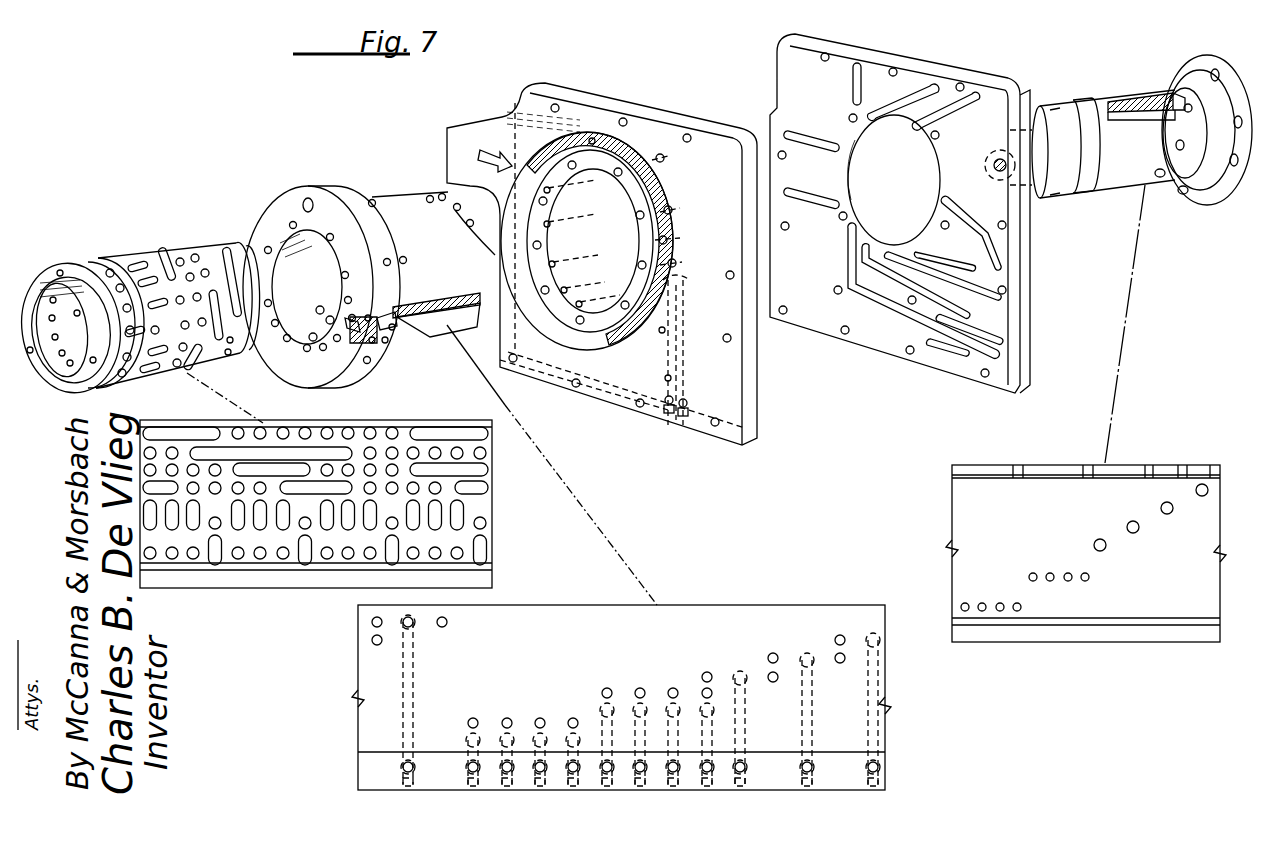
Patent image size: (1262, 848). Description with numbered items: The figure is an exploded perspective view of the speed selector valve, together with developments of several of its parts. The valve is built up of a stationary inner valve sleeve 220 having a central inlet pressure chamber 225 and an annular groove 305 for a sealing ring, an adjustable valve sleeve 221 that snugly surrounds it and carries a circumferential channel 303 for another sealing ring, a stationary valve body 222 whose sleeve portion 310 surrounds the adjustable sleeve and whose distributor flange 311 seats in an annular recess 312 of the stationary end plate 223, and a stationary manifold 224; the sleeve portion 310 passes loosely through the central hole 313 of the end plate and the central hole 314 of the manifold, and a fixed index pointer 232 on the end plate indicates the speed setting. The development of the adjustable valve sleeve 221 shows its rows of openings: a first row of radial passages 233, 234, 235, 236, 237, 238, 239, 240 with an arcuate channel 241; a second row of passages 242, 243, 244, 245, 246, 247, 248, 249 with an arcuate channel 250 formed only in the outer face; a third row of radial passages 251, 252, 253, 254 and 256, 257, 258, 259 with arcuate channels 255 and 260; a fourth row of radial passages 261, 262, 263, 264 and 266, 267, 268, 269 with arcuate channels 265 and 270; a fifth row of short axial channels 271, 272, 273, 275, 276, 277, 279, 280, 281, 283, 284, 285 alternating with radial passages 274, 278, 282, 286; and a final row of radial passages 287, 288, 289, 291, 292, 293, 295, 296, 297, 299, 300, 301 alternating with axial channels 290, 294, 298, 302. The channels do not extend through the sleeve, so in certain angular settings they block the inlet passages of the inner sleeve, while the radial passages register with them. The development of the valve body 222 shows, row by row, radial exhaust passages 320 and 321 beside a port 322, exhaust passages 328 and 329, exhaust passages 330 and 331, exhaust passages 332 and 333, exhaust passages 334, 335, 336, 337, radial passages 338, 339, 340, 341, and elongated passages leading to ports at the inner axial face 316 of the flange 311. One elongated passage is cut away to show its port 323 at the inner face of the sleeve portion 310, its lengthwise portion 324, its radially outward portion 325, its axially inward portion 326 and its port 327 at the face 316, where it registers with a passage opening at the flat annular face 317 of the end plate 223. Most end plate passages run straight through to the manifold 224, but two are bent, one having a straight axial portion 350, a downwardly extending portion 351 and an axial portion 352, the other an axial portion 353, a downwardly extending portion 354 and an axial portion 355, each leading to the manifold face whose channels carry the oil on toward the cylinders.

The stationary inner valve sleeve 220 is at (1128, 196).
The adjustable valve sleeve 221 is at (180, 246).
The stationary valve body 222 is at (388, 190).
The stationary end plate 223 is at (703, 120).
The stationary manifold 224 is at (867, 338).
The inlet pressure chamber 225 is at (1158, 92).
The fixed index pointer 232 is at (490, 150).
The radial passage 233 is at (241, 428).
The radial passage 234 is at (263, 428).
The radial passage 235 is at (284, 427).
The radial passage 236 is at (305, 427).
The radial passage 237 is at (328, 427).
The radial passage 238 is at (348, 427).
The radial passage 239 is at (370, 427).
The radial passage 240 is at (393, 427).
The arcuate channel 241 is at (163, 430).
The second row passage 242 is at (152, 457).
The second row passage 243 is at (174, 457).
The second row passage 244 is at (371, 457).
The second row passage 245 is at (394, 457).
The second row passage 246 is at (416, 457).
The second row passage 247 is at (439, 457).
The second row passage 248 is at (460, 457).
The second row passage 249 is at (487, 455).
The arcuate channel 250 is at (214, 450).
The radial passage 251 is at (151, 474).
The radial passage 252 is at (174, 474).
The radial passage 253 is at (195, 474).
The radial passage 254 is at (217, 474).
The arcuate channel 255 is at (290, 470).
The radial passage 256 is at (327, 474).
The radial passage 257 is at (350, 474).
The radial passage 258 is at (371, 474).
The radial passage 259 is at (394, 474).
The arcuate channel 260 is at (462, 470).
The radial passage 261 is at (189, 493).
The radial passage 262 is at (212, 493).
The radial passage 263 is at (237, 493).
The radial passage 264 is at (262, 493).
The arcuate channel 265 is at (322, 490).
The radial passage 266 is at (366, 493).
The radial passage 267 is at (390, 493).
The radial passage 268 is at (412, 493).
The radial passage 269 is at (434, 493).
The arcuate channel 270 is at (146, 492).
The axial channel 271 is at (152, 521).
The axial channel 272 is at (176, 521).
The axial channel 273 is at (197, 521).
The radial passage 274 is at (217, 517).
The axial channel 275 is at (242, 521).
The axial channel 276 is at (265, 521).
The axial channel 277 is at (287, 521).
The radial passage 278 is at (307, 517).
The axial channel 279 is at (329, 521).
The axial channel 280 is at (352, 521).
The axial channel 281 is at (374, 521).
The radial passage 282 is at (394, 517).
The axial channel 283 is at (414, 521).
The axial channel 284 is at (437, 521).
The axial channel 285 is at (459, 521).
The radial passage 286 is at (487, 524).
The radial passage 287 is at (150, 559).
The radial passage 288 is at (172, 559).
The radial passage 289 is at (193, 559).
The axial channel 290 is at (215, 565).
The radial passage 291 is at (238, 559).
The radial passage 292 is at (260, 559).
The radial passage 293 is at (283, 559).
The axial channel 294 is at (305, 565).
The radial passage 295 is at (327, 559).
The radial passage 296 is at (348, 559).
The radial passage 297 is at (370, 559).
The axial channel 298 is at (392, 565).
The radial passage 299 is at (413, 559).
The radial passage 300 is at (435, 559).
The radial passage 301 is at (457, 559).
The axial channel 302 is at (487, 553).
The circumferential channel 303 is at (86, 262).
The annular groove 305 is at (1087, 192).
The sleeve portion 310 is at (406, 202).
The distributor flange 311 is at (290, 192).
The annular recess 312 is at (528, 160).
The central hole 313 is at (612, 192).
The central hole 314 is at (920, 160).
The inner axial face 316 is at (350, 188).
The flat annular face 317 is at (557, 157).
The radial exhaust passage 320 is at (371, 622).
The radial exhaust passage 321 is at (448, 622).
The port 322 is at (413, 620).
The port 323 is at (390, 303).
The lengthwise interior portion 324 is at (348, 322).
The radially outwardly extending portion 325 is at (360, 332).
The axially inwardly extending portion 326 is at (382, 337).
The port 327 is at (400, 332).
The radial exhaust passage 328 is at (371, 641).
The radial exhaust passage 329 is at (840, 635).
The radial exhaust passage 330 is at (773, 653).
The radial exhaust passage 331 is at (851, 654).
The radial exhaust passage 332 is at (708, 672).
The radial exhaust passage 333 is at (777, 673).
The radial exhaust passage 334 is at (610, 683).
The radial exhaust passage 335 is at (643, 683).
The radial exhaust passage 336 is at (676, 683).
The radial exhaust passage 337 is at (712, 690).
The radial passage 338 is at (480, 713).
The radial passage 339 is at (512, 713).
The radial passage 340 is at (433, 290).
The radial passage 341 is at (575, 713).
The straight axial portion 350 is at (683, 262).
The downwardly extending portion 351 is at (690, 310).
The axial portion 352 is at (690, 378).
The axial portion 353 is at (690, 285).
The downwardly extending portion 354 is at (665, 362).
The axial portion 355 is at (672, 418).